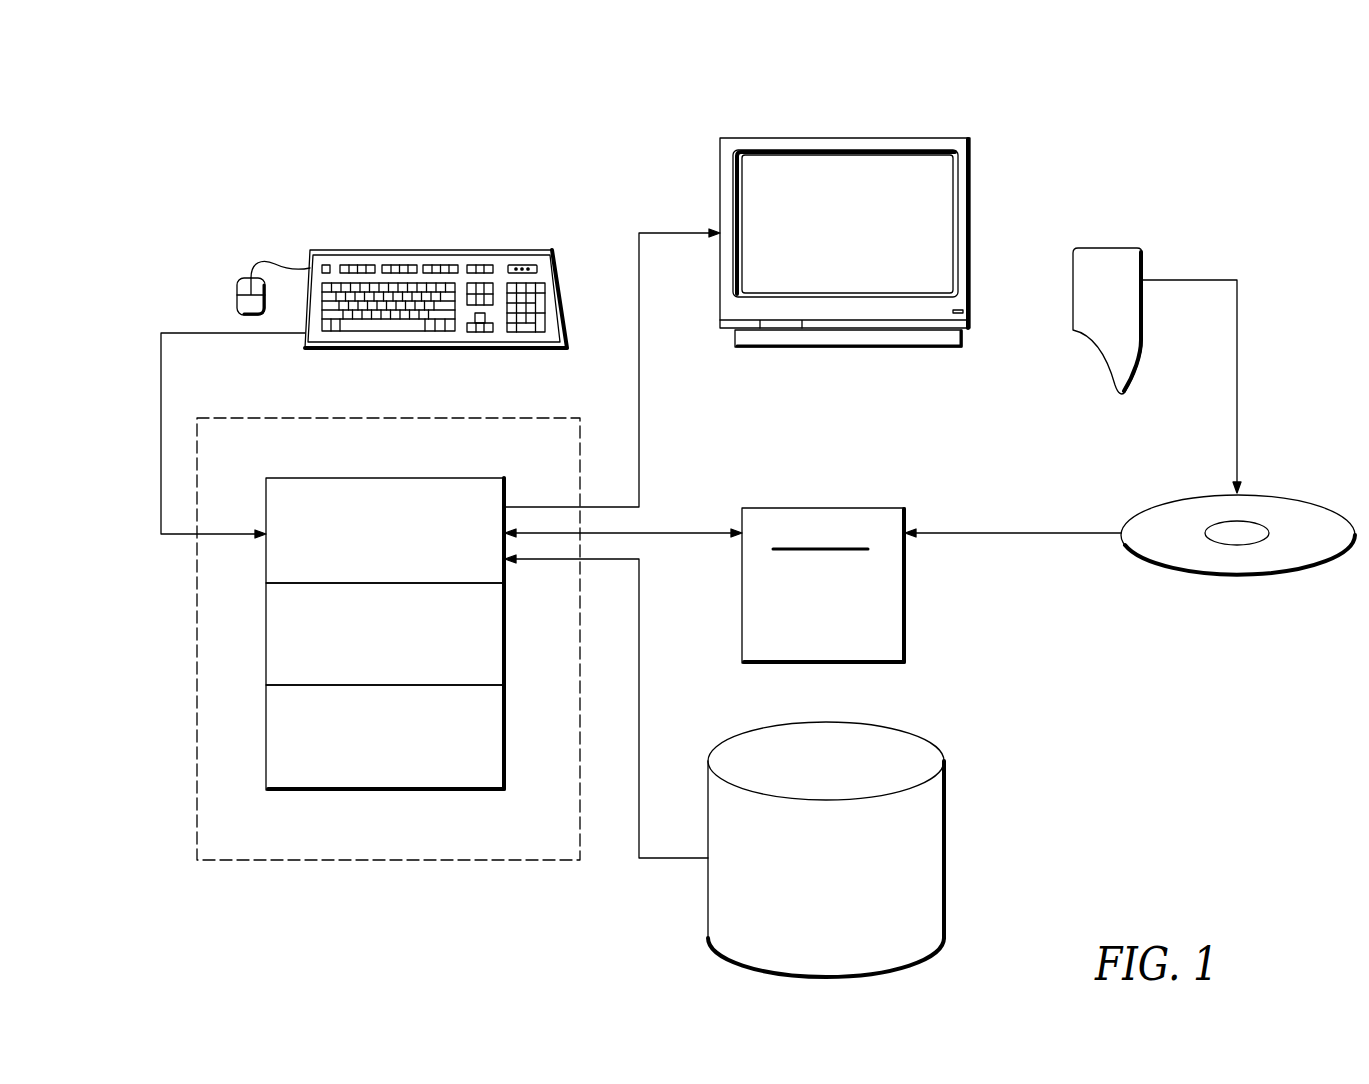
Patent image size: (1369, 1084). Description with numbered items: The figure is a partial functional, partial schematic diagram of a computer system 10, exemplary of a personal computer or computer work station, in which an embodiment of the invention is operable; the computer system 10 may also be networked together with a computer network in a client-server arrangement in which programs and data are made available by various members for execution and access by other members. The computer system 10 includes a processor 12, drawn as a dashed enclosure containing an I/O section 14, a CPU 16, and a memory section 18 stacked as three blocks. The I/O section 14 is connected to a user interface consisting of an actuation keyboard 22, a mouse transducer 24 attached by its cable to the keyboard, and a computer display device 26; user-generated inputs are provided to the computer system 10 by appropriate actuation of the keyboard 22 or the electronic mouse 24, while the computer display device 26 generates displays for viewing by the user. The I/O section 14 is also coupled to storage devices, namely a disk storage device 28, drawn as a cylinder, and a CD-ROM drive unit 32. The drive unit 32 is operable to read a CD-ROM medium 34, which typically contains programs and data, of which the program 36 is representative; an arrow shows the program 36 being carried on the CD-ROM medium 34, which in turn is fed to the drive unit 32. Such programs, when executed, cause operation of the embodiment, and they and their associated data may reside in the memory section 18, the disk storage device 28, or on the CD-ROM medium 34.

The computer system 10 is at (641, 93).
The processor 12 is at (186, 738).
The I/O section 14 is at (450, 478).
The CPU 16 is at (505, 633).
The memory section 18 is at (505, 733).
The actuation keyboard 22 is at (442, 250).
The mouse transducer 24 is at (237, 300).
The computer display device 26 is at (920, 138).
The disk storage device 28 is at (945, 805).
The CD-ROM drive unit 32 is at (847, 508).
The CD-ROM medium 34 is at (1300, 500).
The program 36 is at (1118, 248).